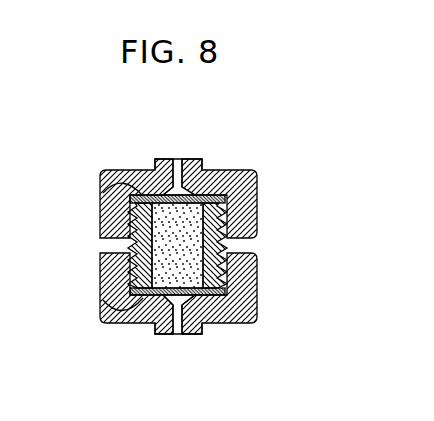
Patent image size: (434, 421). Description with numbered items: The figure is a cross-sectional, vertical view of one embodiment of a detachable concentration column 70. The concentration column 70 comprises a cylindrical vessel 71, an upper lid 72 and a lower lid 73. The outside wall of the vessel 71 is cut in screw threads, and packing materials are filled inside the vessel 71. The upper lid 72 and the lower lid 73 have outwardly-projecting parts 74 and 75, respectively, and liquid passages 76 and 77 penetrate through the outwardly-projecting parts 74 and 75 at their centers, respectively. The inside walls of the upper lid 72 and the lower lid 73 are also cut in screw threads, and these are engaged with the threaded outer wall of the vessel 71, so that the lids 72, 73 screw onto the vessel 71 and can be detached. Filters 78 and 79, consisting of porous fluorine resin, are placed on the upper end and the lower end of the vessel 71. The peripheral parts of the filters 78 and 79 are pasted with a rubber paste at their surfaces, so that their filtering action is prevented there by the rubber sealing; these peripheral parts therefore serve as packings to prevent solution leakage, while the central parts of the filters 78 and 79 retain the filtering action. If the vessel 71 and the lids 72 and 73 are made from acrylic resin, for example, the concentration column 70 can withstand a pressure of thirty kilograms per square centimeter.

The concentration column 70 is at (239, 170).
The cylindrical vessel 71 is at (130, 250).
The upper lid 72 is at (258, 205).
The lower lid 73 is at (258, 285).
The outwardly-projecting part 74 is at (152, 163).
The outwardly-projecting part 75 is at (157, 327).
The liquid passage 76 is at (177, 161).
The liquid passage 77 is at (178, 333).
The filter 78 is at (104, 189).
The filter 79 is at (130, 307).